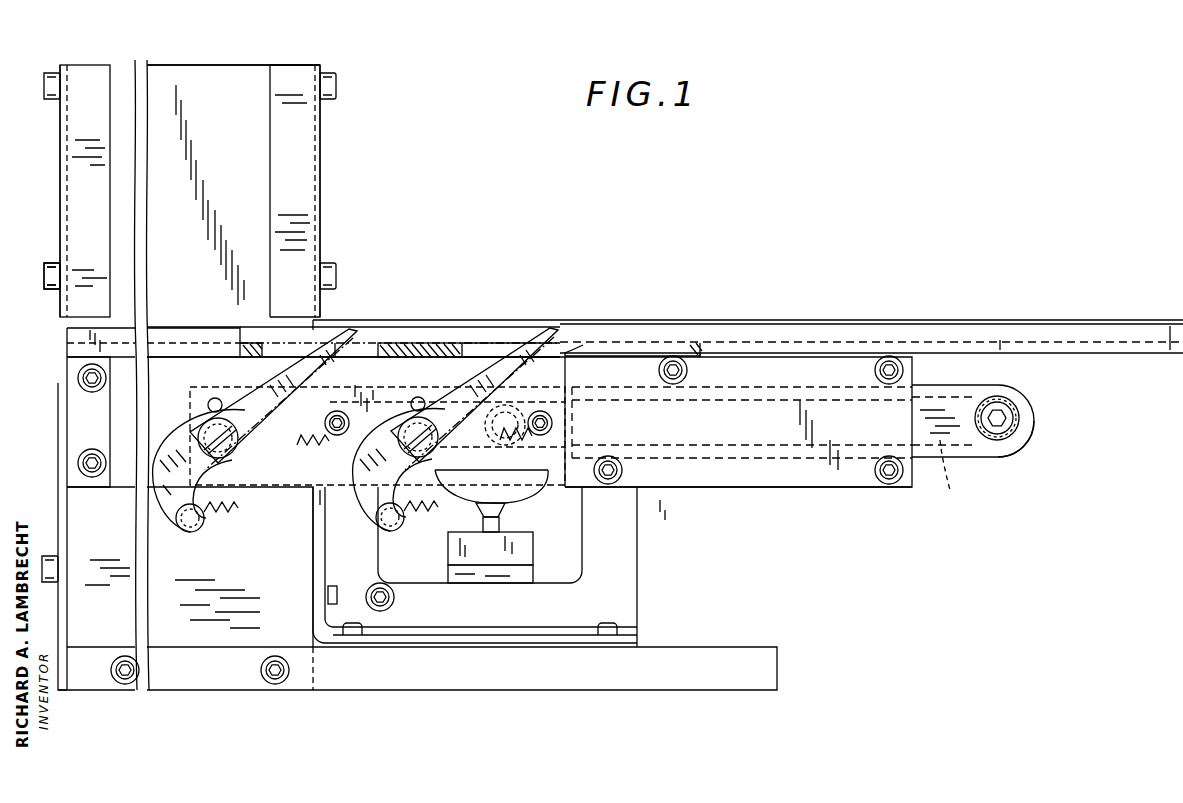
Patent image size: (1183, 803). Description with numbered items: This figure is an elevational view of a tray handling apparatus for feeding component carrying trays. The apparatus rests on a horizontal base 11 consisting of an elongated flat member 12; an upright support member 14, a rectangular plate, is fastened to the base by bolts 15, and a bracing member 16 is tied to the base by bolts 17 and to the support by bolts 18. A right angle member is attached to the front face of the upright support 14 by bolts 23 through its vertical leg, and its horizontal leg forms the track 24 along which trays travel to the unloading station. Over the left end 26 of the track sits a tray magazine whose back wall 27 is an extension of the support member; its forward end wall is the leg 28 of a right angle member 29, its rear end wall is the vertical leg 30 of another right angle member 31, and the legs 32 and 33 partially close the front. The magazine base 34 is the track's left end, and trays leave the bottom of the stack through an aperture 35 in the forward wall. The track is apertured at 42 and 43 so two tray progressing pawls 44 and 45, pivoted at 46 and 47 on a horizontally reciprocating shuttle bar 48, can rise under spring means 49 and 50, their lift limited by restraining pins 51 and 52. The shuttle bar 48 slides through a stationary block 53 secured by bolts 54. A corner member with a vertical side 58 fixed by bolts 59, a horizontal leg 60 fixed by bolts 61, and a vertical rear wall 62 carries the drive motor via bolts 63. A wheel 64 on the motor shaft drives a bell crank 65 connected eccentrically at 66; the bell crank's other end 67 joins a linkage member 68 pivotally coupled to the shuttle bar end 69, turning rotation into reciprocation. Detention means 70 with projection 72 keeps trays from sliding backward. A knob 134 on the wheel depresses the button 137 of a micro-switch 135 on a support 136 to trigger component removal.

The horizontal base 11 is at (225, 706).
The elongated flat member 12 is at (433, 690).
The upright support member 14 is at (223, 64).
The bolts 15 is at (125, 685).
The bracing member 16 is at (58, 392).
The bolts 17 is at (58, 690).
The bolts 18 is at (44, 266).
The bolts 23 is at (92, 394).
The track 24 is at (780, 318).
The left end of track 26 is at (158, 360).
The back wall 27 is at (208, 211).
The leg of right angle member 28 is at (322, 216).
The right angle member 29 is at (320, 66).
The vertical leg 30 is at (60, 222).
The right angle member 31 is at (60, 68).
The leg 32 is at (295, 191).
The leg 33 is at (85, 191).
The base of magazine 34 is at (180, 327).
The aperture 35 is at (313, 322).
The aperture in track 42 is at (476, 344).
The aperture in track 43 is at (376, 344).
The tray progressing pawl 44 is at (527, 356).
The tray progressing pawl 45 is at (250, 392).
The pivot 46 is at (410, 426).
The pivot 47 is at (190, 436).
The shuttle bar 48 is at (540, 482).
The spring means 49 is at (392, 528).
The spring means 50 is at (226, 514).
The restraining pin 51 is at (415, 398).
The restraining pin 52 is at (214, 398).
The stationary block 53 is at (805, 488).
The bolts 54 is at (622, 473).
The vertical side 58 is at (313, 562).
The bolts 59 is at (337, 82).
The horizontal leg 60 is at (515, 628).
The bolts 61 is at (366, 628).
The vertical rear wall 62 is at (640, 588).
The bolts 63 is at (368, 603).
The wheel 64 is at (428, 342).
The bell crank 65 is at (943, 450).
The eccentric connection 66 is at (484, 406).
The end of bell crank 67 is at (975, 390).
The linkage member 68 is at (1020, 423).
The end of shuttle bar 69 is at (1015, 455).
The detention means 70 is at (616, 368).
The projection 72 is at (582, 348).
The knob 134 is at (480, 508).
The micro-switch 135 is at (450, 558).
The support 136 is at (535, 578).
The button 137 is at (500, 522).